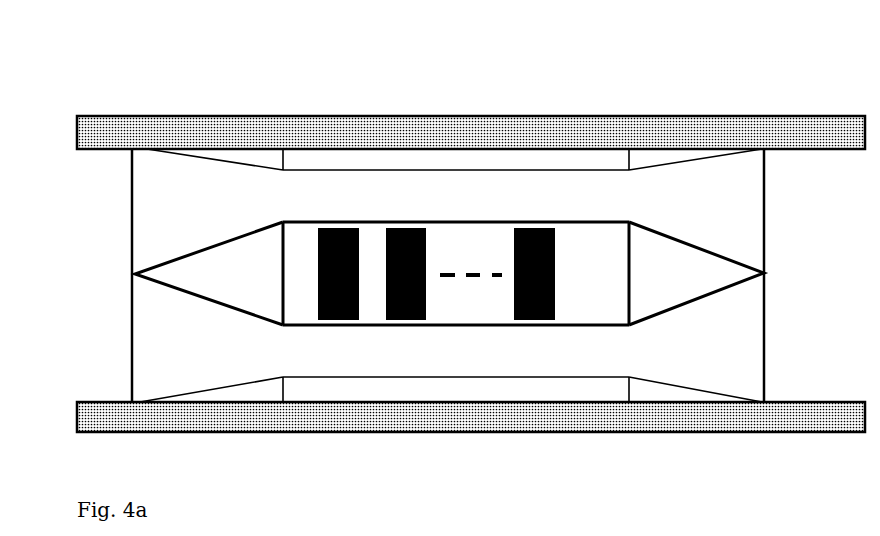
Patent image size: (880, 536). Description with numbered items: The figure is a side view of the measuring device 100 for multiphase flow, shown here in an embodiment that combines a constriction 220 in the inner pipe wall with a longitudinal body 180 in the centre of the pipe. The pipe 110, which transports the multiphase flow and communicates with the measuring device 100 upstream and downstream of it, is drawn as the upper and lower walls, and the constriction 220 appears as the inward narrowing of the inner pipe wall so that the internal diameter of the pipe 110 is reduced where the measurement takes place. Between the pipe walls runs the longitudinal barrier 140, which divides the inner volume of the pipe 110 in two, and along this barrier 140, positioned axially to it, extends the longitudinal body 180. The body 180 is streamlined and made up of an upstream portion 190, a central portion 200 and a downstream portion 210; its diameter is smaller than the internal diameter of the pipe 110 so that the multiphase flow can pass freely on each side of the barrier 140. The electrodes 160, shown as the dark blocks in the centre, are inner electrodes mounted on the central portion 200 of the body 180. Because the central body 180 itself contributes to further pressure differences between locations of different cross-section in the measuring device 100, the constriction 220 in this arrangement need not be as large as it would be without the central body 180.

The measuring device 100 is at (138, 78).
The pipe 110 is at (249, 107).
The longitudinal barrier 140 is at (742, 189).
The electrodes 160 is at (334, 213).
The longitudinal body 180 is at (496, 206).
The upstream portion 190 is at (156, 251).
The central portion 200 is at (588, 234).
The downstream portion 210 is at (730, 266).
The constriction 220 is at (439, 147).